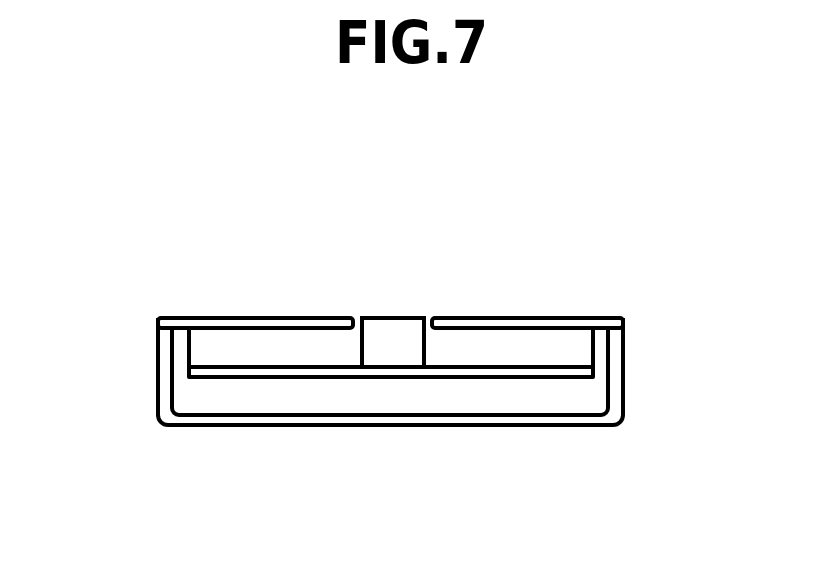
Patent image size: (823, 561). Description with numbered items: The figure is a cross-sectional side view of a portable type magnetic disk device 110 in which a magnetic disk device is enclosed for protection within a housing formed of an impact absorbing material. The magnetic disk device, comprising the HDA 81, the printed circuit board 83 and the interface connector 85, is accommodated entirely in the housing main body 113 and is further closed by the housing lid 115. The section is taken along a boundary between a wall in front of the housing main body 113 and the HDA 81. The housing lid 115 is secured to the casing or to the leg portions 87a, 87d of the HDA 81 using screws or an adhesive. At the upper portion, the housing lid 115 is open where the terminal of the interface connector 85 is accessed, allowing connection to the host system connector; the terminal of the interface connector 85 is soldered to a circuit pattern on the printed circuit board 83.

The portable type magnetic disk device 110 is at (615, 292).
The housing main body 113 is at (613, 395).
The HDA 81 is at (435, 398).
The leg portion 87a is at (613, 363).
The leg portion 87d is at (185, 358).
The housing lid 115 is at (492, 325).
The interface connector 85 is at (390, 325).
The printed circuit board 83 is at (263, 373).